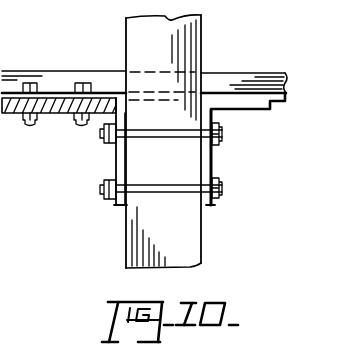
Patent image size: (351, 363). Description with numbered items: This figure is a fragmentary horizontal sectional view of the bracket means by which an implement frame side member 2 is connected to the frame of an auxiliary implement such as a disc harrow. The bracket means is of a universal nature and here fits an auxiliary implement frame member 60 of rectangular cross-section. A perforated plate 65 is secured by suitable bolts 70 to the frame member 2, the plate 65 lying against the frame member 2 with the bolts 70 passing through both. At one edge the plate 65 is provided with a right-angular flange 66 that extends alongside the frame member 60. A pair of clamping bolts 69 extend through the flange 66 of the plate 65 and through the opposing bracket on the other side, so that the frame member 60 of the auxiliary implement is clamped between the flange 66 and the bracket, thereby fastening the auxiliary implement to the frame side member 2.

The implement frame side member 2 is at (237, 50).
The auxiliary implement frame member 60 is at (211, 247).
The perforated plate 65 is at (44, 131).
The right-angular flange 66 is at (116, 159).
The clamping bolts 69 is at (107, 232).
The bolts 70 is at (77, 84).